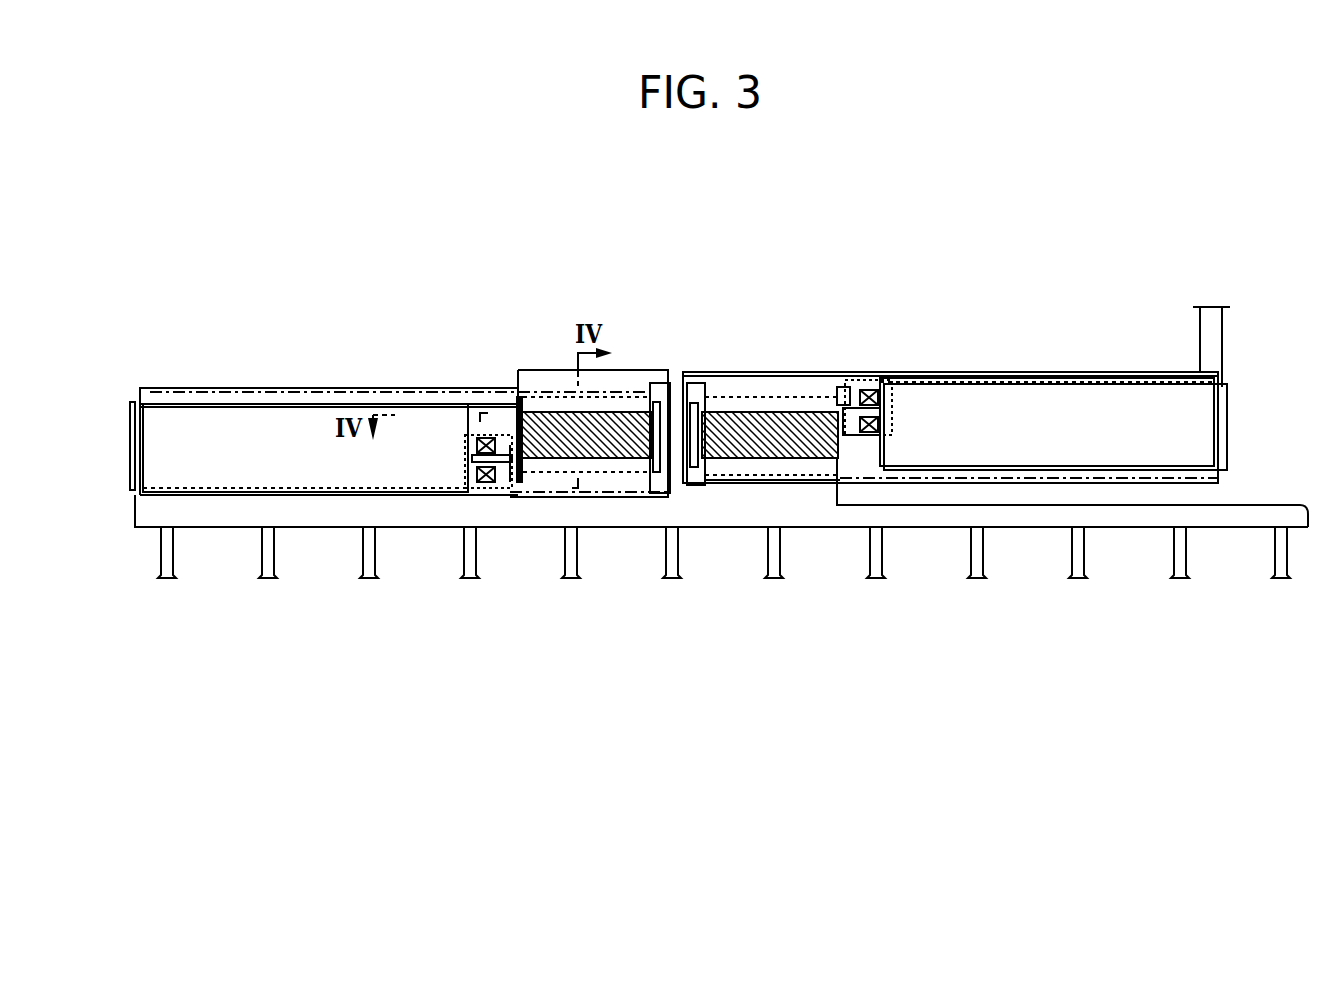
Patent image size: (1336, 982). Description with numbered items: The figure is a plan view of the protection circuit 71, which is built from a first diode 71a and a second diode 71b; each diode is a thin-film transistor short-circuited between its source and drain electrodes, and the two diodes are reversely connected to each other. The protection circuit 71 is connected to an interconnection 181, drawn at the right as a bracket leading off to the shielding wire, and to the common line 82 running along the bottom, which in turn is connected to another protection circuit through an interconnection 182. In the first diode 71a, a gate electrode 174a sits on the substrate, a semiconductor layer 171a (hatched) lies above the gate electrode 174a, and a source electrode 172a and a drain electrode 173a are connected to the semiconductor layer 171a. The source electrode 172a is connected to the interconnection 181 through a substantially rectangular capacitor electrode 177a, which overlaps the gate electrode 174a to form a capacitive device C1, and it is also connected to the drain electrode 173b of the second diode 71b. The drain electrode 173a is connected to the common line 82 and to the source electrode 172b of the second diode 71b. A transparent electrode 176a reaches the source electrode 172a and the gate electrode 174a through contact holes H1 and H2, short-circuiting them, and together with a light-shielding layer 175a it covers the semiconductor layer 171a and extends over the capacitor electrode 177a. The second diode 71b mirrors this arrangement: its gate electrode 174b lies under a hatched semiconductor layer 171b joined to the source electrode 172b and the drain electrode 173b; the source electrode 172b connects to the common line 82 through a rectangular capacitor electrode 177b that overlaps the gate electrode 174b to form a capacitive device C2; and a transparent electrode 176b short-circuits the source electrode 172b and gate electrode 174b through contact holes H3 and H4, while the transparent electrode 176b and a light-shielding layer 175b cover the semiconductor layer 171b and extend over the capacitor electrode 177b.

The protection circuit 71 is at (1085, 283).
The first diode 71a is at (809, 305).
The second diode 71b is at (431, 299).
The common line 82 is at (1136, 527).
The interconnection 181 is at (1215, 340).
The interconnection 182 is at (173, 565).
The semiconductor layer 171a is at (760, 455).
The semiconductor layer 171b is at (615, 470).
The source electrode 172a is at (752, 400).
The source electrode 172b is at (560, 465).
The drain electrode 173a is at (797, 470).
The drain electrode 173b is at (617, 400).
The gate electrode 174a is at (865, 450).
The gate electrode 174b is at (497, 412).
The light-shielding layer 175a is at (1125, 370).
The light-shielding layer 175b is at (218, 390).
The transparent electrode 176a is at (1020, 487).
The transparent electrode 176b is at (318, 497).
The capacitor electrode 177a is at (1180, 427).
The capacitor electrode 177b is at (188, 420).
The capacitive device C1 is at (999, 365).
The capacitive device C2 is at (267, 380).
The contact hole H1 is at (868, 390).
The contact hole H2 is at (885, 418).
The contact hole H3 is at (490, 485).
The contact hole H4 is at (478, 447).